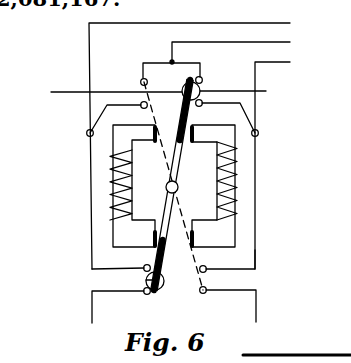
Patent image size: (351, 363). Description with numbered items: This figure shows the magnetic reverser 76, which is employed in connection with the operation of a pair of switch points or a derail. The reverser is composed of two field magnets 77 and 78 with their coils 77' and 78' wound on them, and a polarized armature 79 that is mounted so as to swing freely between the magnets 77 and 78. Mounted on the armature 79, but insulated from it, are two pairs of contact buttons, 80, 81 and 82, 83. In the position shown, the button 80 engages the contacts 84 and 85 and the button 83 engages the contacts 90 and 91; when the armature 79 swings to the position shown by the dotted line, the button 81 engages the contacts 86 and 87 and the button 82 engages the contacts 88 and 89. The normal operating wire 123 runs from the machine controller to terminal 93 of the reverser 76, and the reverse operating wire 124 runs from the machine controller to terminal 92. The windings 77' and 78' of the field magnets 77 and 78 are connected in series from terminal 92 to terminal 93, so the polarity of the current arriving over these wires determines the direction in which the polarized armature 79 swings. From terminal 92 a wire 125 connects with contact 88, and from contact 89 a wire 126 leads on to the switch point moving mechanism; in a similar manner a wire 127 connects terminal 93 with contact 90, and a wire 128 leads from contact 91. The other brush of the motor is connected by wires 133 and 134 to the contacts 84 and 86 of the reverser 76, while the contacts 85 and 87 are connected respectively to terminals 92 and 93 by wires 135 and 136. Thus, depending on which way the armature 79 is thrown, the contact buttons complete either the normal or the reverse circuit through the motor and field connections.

The normal operating wire 123 is at (250, 23).
The wire 133 is at (250, 42).
The reverse operating wire 124 is at (258, 62).
The wire 134 is at (153, 57).
The contact 86 is at (140, 81).
The contact 84 is at (203, 80).
The contact button 81 is at (107, 93).
The contact button 80 is at (234, 91).
The contact 87 is at (90, 107).
The contact 85 is at (241, 107).
The wire 136 is at (88, 131).
The terminal 93 is at (87, 135).
The wire 135 is at (258, 131).
The terminal 92 is at (258, 135).
The field magnet 78 is at (95, 186).
The coil 78' is at (83, 185).
The field magnet 77 is at (241, 186).
The coil 77' is at (255, 181).
The polarized armature 79 is at (170, 167).
The magnetic reverser 76 is at (176, 186).
The contact button 82 is at (165, 281).
The contact button 83 is at (146, 280).
The contact 90 is at (144, 267).
The contact 91 is at (144, 293).
The contact 88 is at (206, 267).
The contact 89 is at (206, 292).
The wire 127 is at (92, 254).
The wire 128 is at (92, 310).
The wire 125 is at (258, 254).
The wire 126 is at (258, 311).